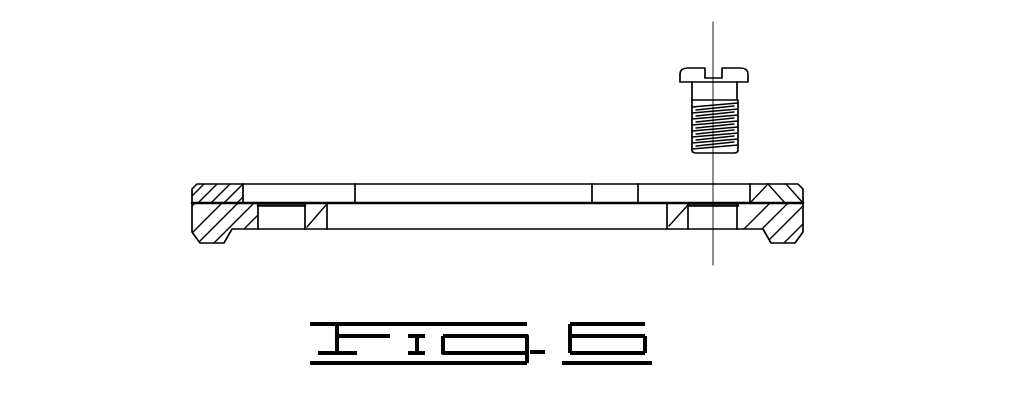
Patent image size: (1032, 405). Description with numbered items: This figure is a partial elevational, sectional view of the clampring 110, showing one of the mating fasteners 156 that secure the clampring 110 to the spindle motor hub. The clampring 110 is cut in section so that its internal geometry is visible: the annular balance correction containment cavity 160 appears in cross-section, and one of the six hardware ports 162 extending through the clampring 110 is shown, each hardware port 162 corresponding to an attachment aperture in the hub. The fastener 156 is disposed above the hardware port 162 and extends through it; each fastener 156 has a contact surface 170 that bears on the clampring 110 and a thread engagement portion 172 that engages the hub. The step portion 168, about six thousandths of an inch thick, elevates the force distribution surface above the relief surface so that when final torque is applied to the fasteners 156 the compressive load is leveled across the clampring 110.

The clampring 110 is at (468, 188).
The fastener 156 is at (718, 84).
The annular balance correction containment cavity 160 is at (215, 190).
The hardware port 162 is at (705, 229).
The step portion 168 is at (280, 203).
The contact surface 170 is at (682, 88).
The thread engagement portion 172 is at (738, 118).